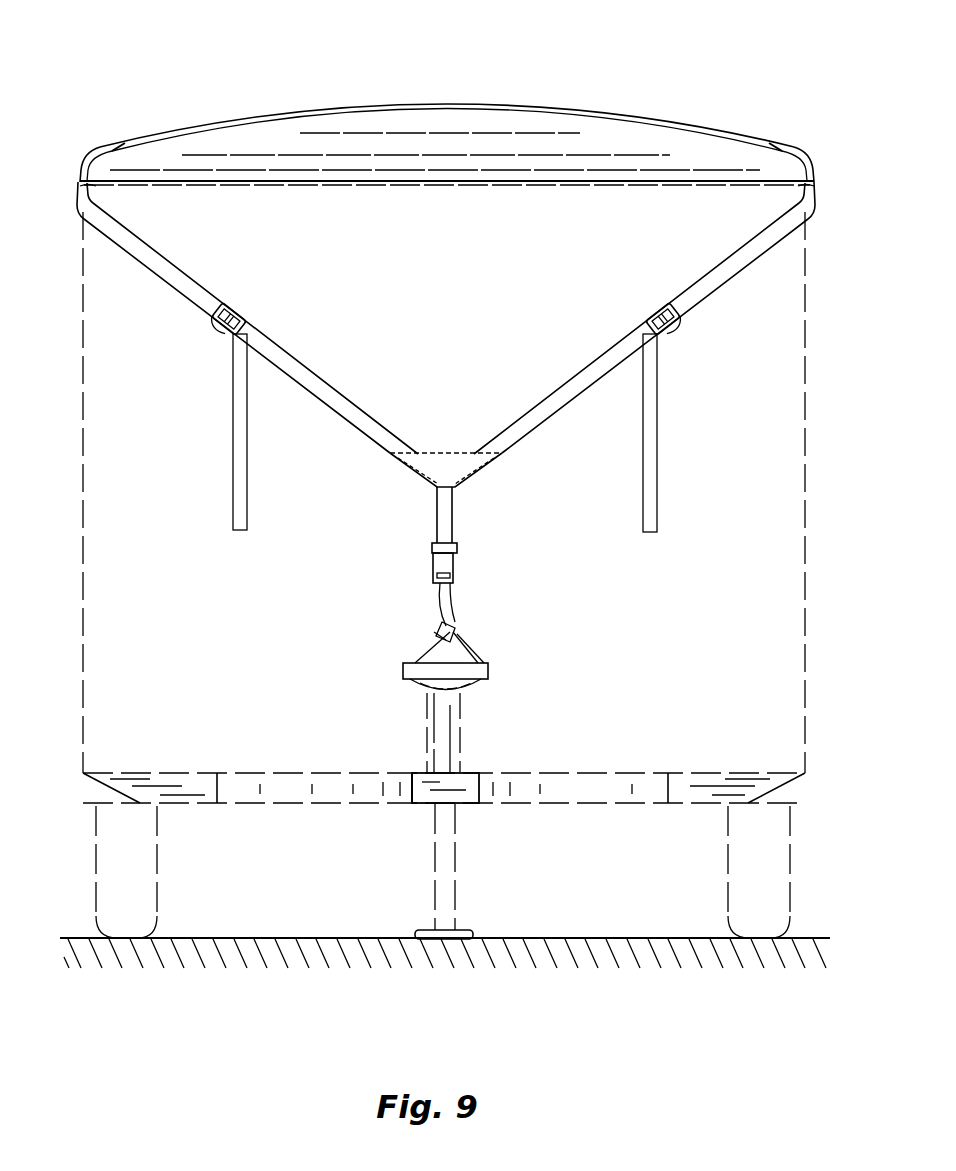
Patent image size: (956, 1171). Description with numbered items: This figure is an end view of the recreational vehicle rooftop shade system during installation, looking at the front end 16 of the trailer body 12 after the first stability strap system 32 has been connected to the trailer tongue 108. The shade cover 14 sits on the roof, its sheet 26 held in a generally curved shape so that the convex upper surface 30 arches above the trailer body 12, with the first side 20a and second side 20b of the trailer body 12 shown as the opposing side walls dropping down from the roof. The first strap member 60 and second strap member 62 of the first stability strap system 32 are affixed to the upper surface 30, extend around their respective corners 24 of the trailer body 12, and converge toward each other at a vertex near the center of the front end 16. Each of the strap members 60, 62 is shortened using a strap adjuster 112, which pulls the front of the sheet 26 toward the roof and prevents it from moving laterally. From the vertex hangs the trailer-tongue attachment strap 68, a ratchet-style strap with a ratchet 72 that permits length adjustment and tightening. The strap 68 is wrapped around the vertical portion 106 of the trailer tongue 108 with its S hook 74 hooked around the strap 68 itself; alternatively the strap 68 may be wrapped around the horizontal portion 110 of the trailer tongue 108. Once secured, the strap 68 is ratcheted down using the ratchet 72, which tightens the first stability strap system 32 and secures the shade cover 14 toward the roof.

The trailer body 12 is at (83, 658).
The shade cover 14 is at (251, 93).
The front end 16 is at (430, 306).
The first side 20a is at (808, 446).
The second side 20b is at (80, 376).
The corner 24 is at (84, 190).
The sheet 26 is at (476, 122).
The convex upper surface 30 is at (380, 104).
The first stability strap system 32 is at (413, 483).
The first strap member 60 is at (735, 268).
The second strap member 62 is at (156, 262).
The trailer-tongue attachment strap 68 is at (450, 514).
The ratchet 72 is at (446, 566).
The S hook 74 is at (455, 636).
The vertical portion 106 is at (452, 720).
The trailer tongue 108 is at (462, 782).
The horizontal portion 110 is at (413, 771).
The strap adjuster 112 is at (246, 320).